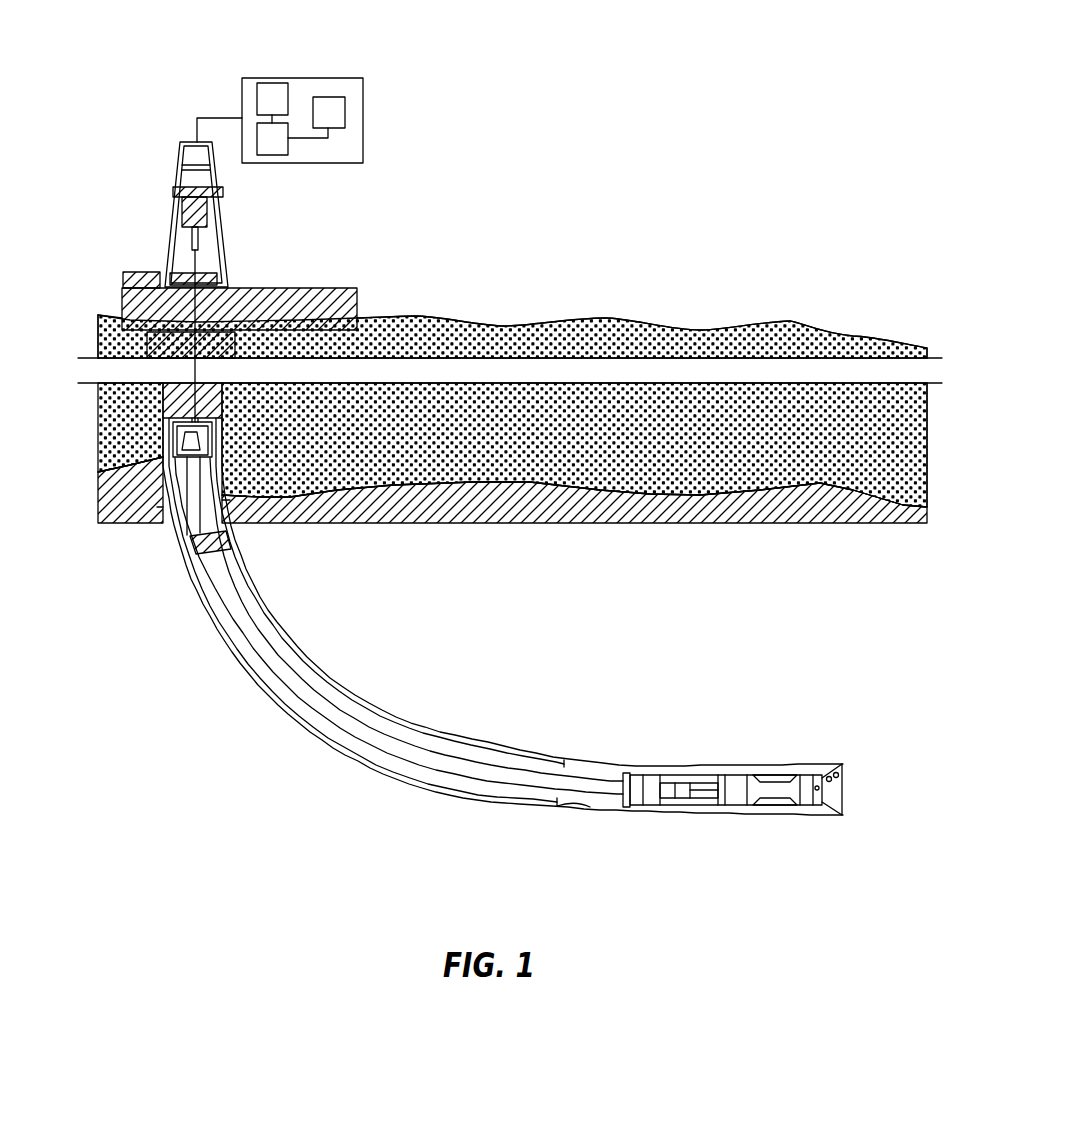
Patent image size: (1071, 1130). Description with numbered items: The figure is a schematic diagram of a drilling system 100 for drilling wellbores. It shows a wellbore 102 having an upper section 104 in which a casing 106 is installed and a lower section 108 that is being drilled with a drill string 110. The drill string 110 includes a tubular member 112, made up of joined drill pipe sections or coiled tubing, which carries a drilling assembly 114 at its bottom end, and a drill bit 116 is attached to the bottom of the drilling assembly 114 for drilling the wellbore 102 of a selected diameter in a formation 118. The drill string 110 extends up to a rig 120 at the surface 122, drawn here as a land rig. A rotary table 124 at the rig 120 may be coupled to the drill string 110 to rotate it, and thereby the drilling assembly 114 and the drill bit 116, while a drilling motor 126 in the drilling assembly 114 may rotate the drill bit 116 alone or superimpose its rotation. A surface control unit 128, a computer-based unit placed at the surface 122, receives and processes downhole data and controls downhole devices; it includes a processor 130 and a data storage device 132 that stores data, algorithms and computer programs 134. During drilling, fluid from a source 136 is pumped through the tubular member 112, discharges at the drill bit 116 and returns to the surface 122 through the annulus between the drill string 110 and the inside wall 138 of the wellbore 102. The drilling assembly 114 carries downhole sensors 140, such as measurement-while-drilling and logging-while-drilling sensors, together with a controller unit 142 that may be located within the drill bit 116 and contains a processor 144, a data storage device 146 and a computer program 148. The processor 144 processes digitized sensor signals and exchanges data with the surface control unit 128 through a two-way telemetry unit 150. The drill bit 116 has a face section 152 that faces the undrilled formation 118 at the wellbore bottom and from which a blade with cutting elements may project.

The drilling system 100 is at (640, 82).
The wellbore 102 is at (214, 636).
The upper section 104 is at (148, 424).
The casing 106 is at (172, 453).
The lower section 108 is at (312, 747).
The drill string 110 is at (252, 612).
The tubular member 112 is at (230, 575).
The drilling assembly 114 is at (758, 792).
The drill bit 116 is at (872, 789).
The formation 118 is at (586, 607).
The rig 120 is at (156, 208).
The surface 122 is at (935, 357).
The rotary table 124 is at (212, 272).
The drilling motor 126 is at (723, 780).
The surface control unit 128 is at (335, 109).
The processor 130 is at (271, 82).
The data storage device 132 is at (273, 156).
The computer programs 134 is at (346, 113).
The source of drilling fluid 136 is at (142, 272).
The inside wall 138 is at (590, 807).
The sensors 140 is at (738, 782).
The controller unit 142 is at (675, 814).
The processor 144 is at (667, 798).
The data storage device 146 is at (686, 798).
The computer program 148 is at (705, 790).
The two-way telemetry unit 150 is at (652, 783).
The face section 152 is at (843, 782).